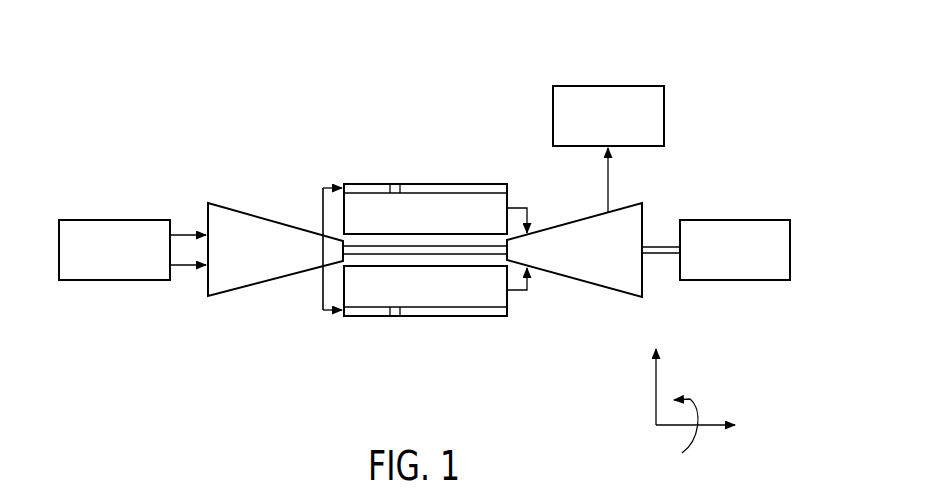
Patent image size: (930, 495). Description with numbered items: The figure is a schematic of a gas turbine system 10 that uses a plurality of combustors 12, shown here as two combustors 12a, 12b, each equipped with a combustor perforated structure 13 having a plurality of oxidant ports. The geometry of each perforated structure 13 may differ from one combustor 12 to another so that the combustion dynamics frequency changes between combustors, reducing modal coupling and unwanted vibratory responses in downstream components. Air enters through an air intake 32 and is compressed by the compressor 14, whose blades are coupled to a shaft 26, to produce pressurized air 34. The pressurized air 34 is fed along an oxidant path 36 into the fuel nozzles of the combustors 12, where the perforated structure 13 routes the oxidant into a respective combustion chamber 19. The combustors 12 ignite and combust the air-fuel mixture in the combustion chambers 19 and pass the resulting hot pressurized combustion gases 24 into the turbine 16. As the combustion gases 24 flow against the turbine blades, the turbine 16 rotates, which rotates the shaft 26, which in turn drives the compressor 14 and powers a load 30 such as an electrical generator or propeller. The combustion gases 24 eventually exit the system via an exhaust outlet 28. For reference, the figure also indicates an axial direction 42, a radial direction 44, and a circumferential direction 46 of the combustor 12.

The gas turbine system 10 is at (709, 26).
The combustor 12 is at (379, 251).
The combustor 12a is at (342, 181).
The combustor 12b is at (342, 320).
The combustor perforated structure 13 is at (393, 183).
The compressor 14 is at (208, 283).
The turbine 16 is at (603, 288).
The combustion chamber 19 is at (466, 209).
The combustion gases 24 is at (528, 216).
The shaft 26 is at (505, 243).
The exhaust outlet 28 is at (608, 86).
The load 30 is at (738, 220).
The air intake 32 is at (117, 220).
The pressurized air 34 is at (322, 222).
The oxidant path 36 is at (370, 182).
The axial direction 42 is at (673, 428).
The radial direction 44 is at (655, 392).
The circumferential direction 46 is at (691, 405).